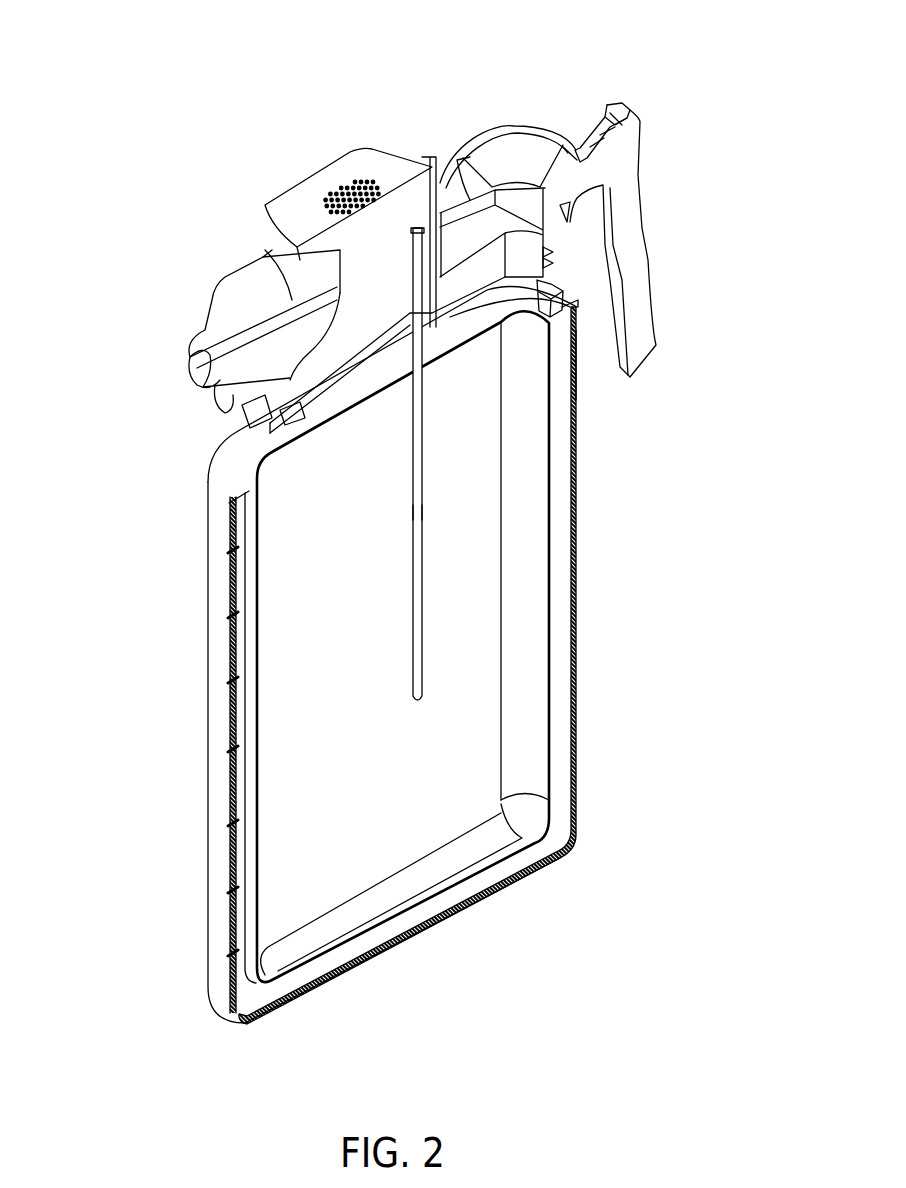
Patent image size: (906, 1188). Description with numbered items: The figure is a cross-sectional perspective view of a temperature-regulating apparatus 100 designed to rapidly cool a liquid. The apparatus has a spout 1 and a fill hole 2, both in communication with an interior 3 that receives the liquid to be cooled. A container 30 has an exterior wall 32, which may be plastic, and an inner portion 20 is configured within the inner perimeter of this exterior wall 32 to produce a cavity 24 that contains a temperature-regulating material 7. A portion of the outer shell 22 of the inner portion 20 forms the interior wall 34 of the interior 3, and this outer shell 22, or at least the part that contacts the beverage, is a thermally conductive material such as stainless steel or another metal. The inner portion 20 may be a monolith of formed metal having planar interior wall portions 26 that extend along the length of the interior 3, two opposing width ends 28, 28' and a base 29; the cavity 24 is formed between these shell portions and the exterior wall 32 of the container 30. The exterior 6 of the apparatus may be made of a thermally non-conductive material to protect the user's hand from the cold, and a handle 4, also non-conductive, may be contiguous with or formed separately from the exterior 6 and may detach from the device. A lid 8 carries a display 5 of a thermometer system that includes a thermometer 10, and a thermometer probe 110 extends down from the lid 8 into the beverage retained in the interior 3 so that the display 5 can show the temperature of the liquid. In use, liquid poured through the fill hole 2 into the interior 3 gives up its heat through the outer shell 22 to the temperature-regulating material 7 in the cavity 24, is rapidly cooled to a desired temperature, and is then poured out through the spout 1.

The temperature-regulating apparatus 100 is at (218, 172).
The spout 1 is at (218, 370).
The fill hole 2 is at (517, 170).
The interior 3 is at (283, 727).
The handle 4 is at (612, 178).
The display 5 is at (348, 180).
The exterior 6 is at (233, 570).
The temperature-regulating material 7 is at (562, 596).
The lid 8 is at (243, 297).
The thermometer 10 is at (417, 465).
The thermometer probe 110 is at (418, 513).
The inner portion 20 is at (557, 672).
The outer shell 22 is at (540, 777).
The cavity 24 is at (557, 740).
The planar interior wall portions 26 is at (447, 819).
The width end 28 is at (481, 561).
The width end 28' is at (403, 646).
The base 29 is at (378, 908).
The container 30 is at (580, 412).
The exterior wall 32 is at (580, 447).
The interior wall 34 is at (538, 613).